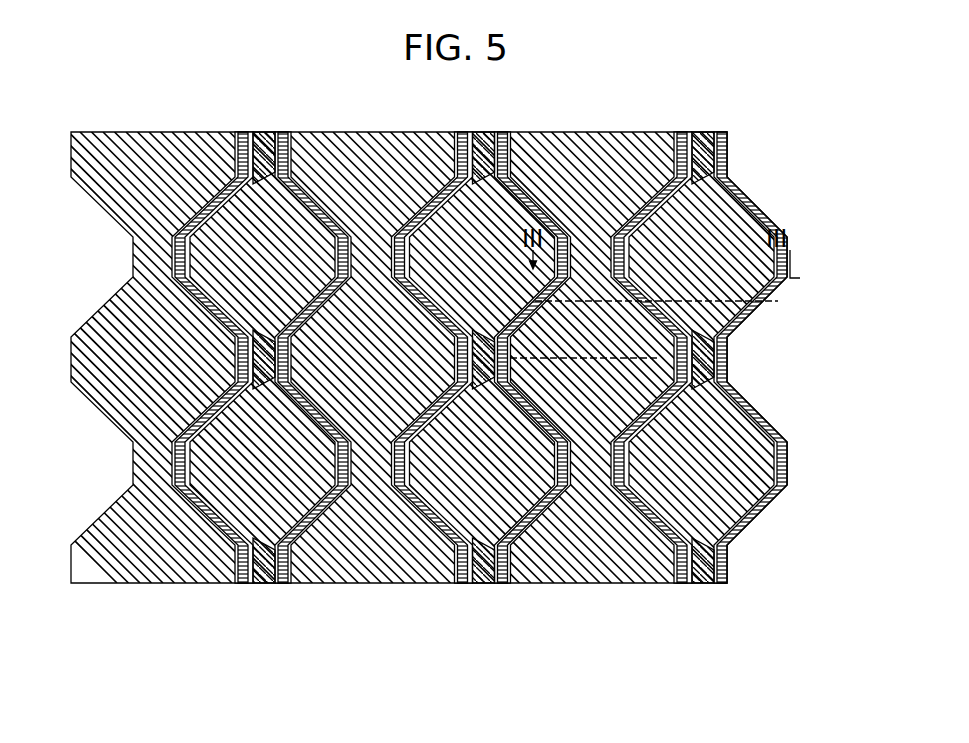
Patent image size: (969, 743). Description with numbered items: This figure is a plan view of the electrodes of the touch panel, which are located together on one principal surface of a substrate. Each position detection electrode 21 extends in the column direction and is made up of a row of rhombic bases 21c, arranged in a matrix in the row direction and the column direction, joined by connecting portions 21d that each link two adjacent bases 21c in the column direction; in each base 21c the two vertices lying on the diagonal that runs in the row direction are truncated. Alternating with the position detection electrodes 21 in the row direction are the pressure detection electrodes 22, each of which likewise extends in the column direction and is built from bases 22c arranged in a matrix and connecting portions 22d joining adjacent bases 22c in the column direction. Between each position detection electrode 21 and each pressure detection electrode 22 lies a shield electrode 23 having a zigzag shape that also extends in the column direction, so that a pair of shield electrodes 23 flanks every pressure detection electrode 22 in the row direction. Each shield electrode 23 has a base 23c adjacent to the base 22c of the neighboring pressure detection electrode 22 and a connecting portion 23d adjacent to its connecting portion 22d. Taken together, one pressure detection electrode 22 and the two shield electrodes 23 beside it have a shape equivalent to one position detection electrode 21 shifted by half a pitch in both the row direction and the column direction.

The position detection electrode 21 is at (183, 586).
The rhombic base 21c is at (489, 346).
The connecting portion 21d is at (573, 226).
The pressure detection electrode 22 is at (264, 586).
The base 22c is at (757, 204).
The connecting portion 22d is at (728, 144).
The shield electrode 23 is at (243, 586).
The base 23c is at (795, 277).
The connecting portion 23d is at (724, 168).